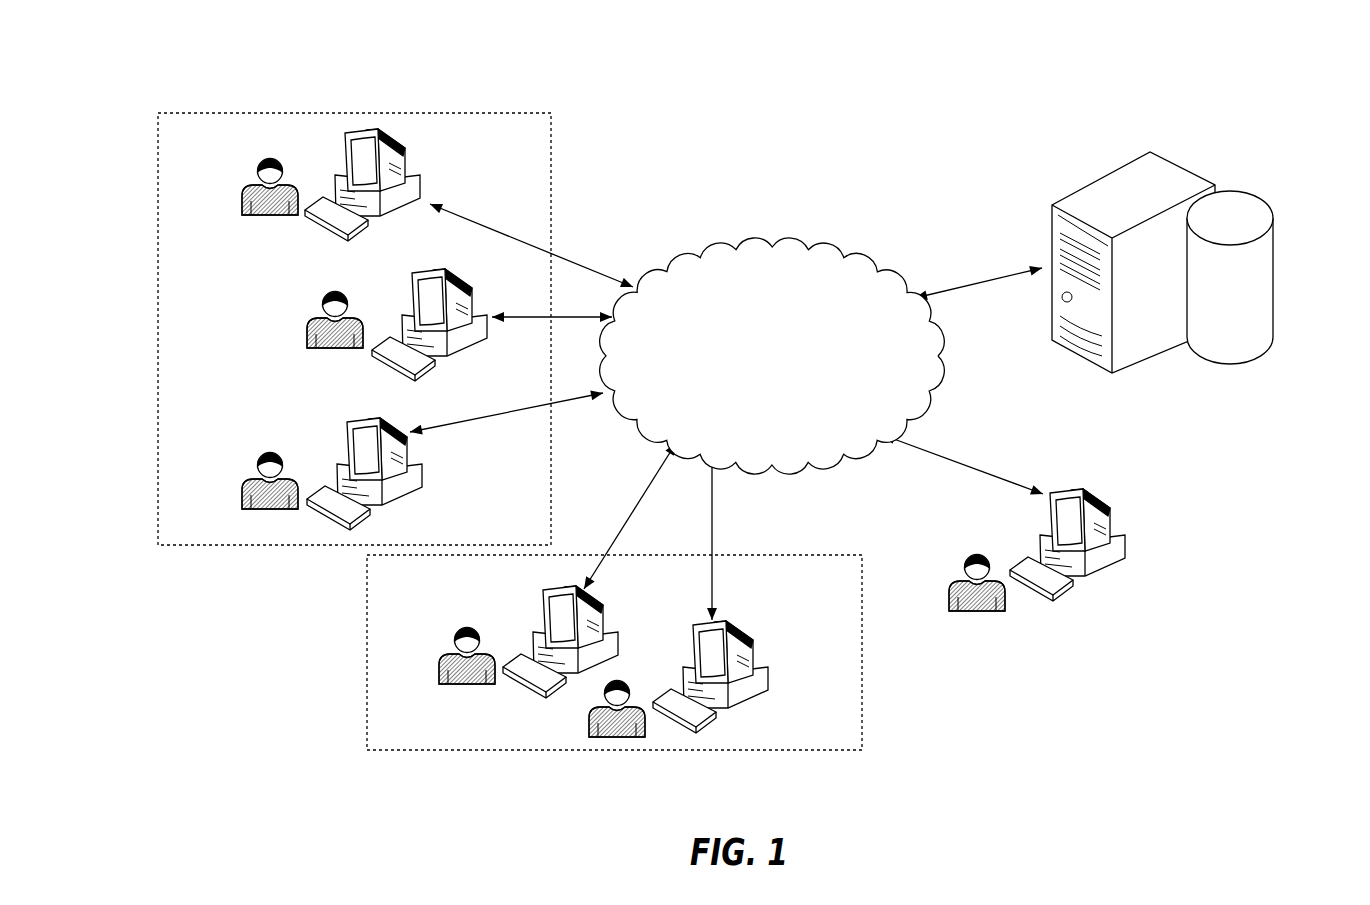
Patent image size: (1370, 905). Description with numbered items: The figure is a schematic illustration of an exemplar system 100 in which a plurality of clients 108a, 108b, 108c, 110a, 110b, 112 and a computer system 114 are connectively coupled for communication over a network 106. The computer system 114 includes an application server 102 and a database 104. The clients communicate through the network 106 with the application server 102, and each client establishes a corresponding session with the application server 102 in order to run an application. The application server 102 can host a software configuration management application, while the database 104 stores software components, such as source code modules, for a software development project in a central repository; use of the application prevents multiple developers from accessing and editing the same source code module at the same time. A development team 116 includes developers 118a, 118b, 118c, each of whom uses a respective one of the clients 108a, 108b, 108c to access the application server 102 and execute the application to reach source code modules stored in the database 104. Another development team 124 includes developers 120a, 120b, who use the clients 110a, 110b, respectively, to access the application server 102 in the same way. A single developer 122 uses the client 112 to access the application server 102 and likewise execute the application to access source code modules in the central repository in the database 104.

The system 100 is at (657, 62).
The application server 102 is at (1178, 165).
The database 104 is at (1273, 215).
The network 106 is at (772, 246).
The client 108a is at (420, 176).
The client 108b is at (425, 275).
The client 108c is at (423, 462).
The client 110a is at (608, 603).
The client 110b is at (757, 640).
The client 112 is at (1110, 506).
The computer system 114 is at (1175, 385).
The development team 116 is at (158, 113).
The developer 118a is at (268, 159).
The developer 118b is at (333, 292).
The developer 118c is at (268, 453).
The developer 120a is at (465, 628).
The developer 120b is at (605, 690).
The developer 122 is at (976, 555).
The development team 124 is at (367, 750).